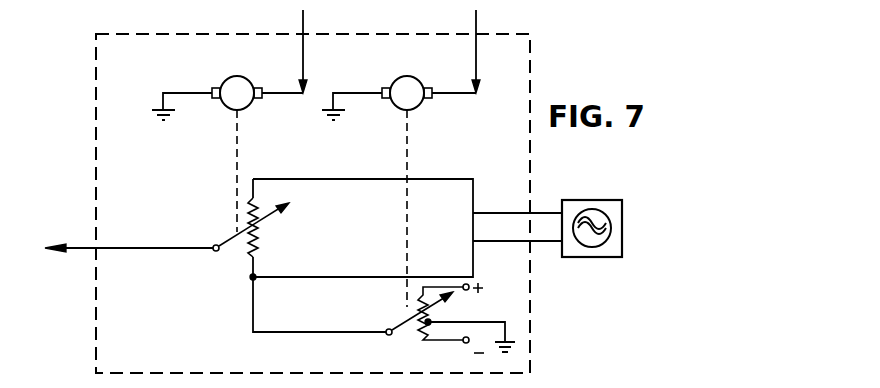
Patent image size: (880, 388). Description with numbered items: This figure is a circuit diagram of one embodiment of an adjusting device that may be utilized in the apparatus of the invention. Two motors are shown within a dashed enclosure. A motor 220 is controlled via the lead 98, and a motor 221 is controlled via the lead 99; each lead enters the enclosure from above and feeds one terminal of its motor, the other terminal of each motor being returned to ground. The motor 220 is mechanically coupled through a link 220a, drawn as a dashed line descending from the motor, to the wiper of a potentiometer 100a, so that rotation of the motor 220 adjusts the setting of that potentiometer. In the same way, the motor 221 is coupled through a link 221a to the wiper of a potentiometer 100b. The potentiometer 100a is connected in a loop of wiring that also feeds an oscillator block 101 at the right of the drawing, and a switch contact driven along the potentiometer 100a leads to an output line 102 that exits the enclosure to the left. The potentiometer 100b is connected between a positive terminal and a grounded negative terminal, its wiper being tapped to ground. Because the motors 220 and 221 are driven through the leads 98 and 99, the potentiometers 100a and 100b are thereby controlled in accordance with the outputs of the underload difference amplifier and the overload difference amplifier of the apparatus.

The lead 98 is at (303, 26).
The lead 99 is at (476, 26).
The motor 220 is at (228, 80).
The motor 221 is at (397, 80).
The link 220a is at (236, 140).
The link 221a is at (409, 158).
The potentiometer 100a is at (266, 232).
The potentiometer 100b is at (417, 328).
The output line 102 is at (80, 247).
The oscillator 101 is at (622, 240).